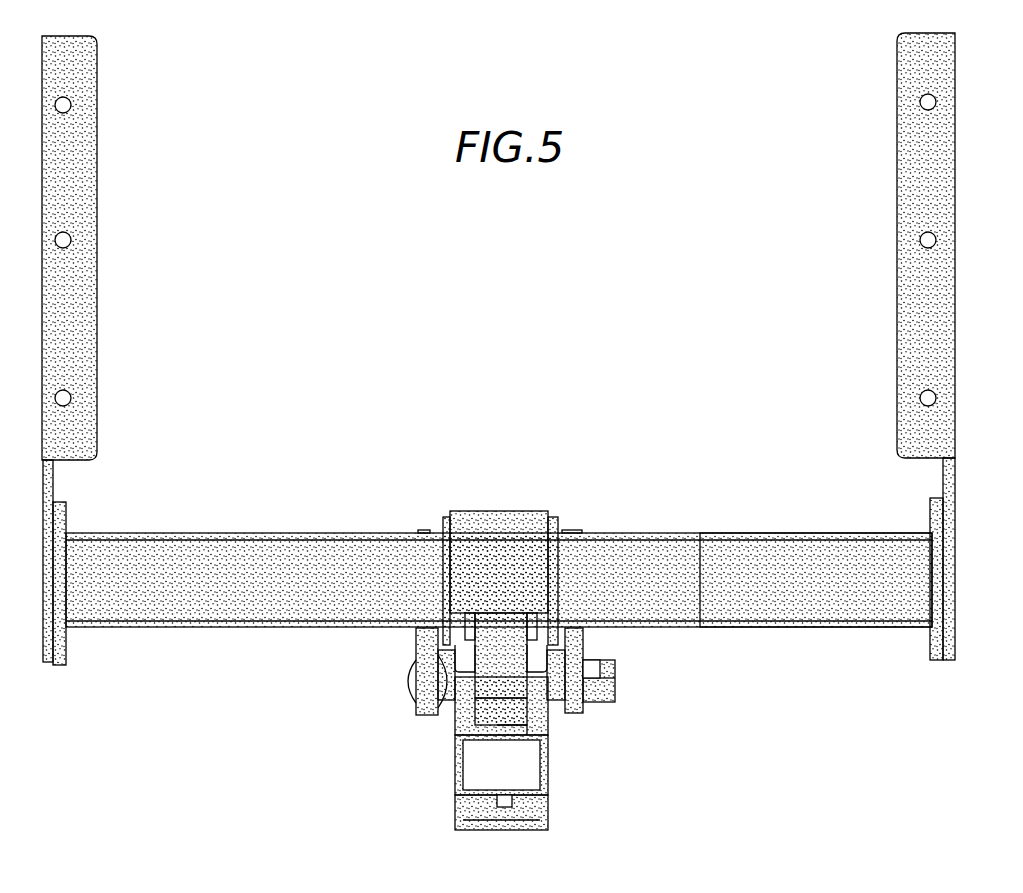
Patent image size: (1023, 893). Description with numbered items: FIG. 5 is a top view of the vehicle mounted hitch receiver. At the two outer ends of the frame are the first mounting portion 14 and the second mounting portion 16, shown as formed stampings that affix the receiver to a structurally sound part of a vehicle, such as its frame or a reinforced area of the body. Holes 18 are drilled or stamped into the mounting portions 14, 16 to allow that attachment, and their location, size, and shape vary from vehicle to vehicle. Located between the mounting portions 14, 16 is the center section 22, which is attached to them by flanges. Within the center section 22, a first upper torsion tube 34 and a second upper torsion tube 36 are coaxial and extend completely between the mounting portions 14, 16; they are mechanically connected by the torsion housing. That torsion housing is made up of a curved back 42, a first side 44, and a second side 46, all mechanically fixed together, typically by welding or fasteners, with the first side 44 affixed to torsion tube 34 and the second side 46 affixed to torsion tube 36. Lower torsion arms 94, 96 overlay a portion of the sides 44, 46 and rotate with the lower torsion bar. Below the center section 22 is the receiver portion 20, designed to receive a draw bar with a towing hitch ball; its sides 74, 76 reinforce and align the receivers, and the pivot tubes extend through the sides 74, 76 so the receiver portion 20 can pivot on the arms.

The first mounting portion 14 is at (82, 175).
The second mounting portion 16 is at (935, 203).
The holes 18 is at (925, 240).
The receiver portion 20 is at (572, 800).
The center section 22 is at (390, 462).
The first upper torsion tube 34 is at (222, 533).
The second upper torsion tube 36 is at (710, 532).
The curved back 42 is at (506, 511).
The first side 44 is at (437, 517).
The second side 46 is at (560, 517).
The side 74 is at (455, 725).
The side 76 is at (548, 725).
The lower torsion arm 94 is at (415, 648).
The lower torsion arm 96 is at (585, 643).